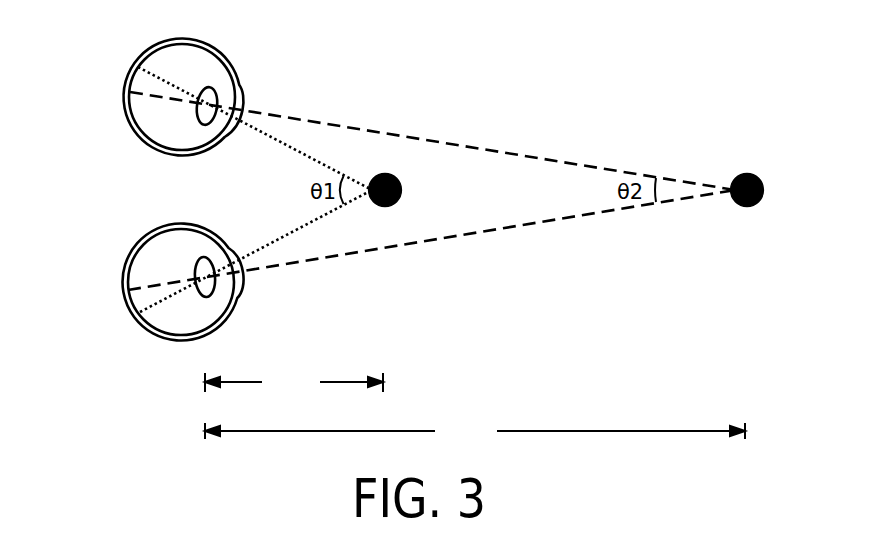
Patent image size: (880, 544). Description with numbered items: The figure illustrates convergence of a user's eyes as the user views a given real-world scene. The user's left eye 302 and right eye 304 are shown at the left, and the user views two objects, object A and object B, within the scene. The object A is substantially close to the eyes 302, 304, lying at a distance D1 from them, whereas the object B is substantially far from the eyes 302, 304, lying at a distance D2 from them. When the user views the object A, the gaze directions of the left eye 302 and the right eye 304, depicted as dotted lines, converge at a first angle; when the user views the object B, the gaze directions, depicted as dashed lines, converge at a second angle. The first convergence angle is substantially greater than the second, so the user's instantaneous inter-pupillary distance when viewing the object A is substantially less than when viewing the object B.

The left eye 302 is at (128, 117).
The right eye 304 is at (123, 270).
The object A is at (398, 190).
The object B is at (760, 190).
The distance D1 is at (294, 383).
The distance D2 is at (475, 433).